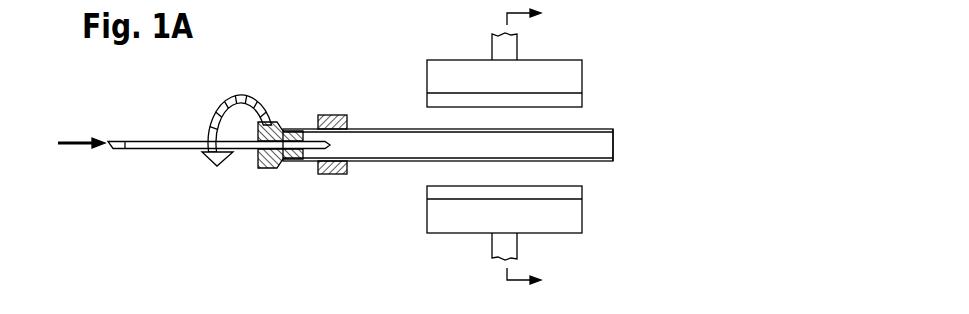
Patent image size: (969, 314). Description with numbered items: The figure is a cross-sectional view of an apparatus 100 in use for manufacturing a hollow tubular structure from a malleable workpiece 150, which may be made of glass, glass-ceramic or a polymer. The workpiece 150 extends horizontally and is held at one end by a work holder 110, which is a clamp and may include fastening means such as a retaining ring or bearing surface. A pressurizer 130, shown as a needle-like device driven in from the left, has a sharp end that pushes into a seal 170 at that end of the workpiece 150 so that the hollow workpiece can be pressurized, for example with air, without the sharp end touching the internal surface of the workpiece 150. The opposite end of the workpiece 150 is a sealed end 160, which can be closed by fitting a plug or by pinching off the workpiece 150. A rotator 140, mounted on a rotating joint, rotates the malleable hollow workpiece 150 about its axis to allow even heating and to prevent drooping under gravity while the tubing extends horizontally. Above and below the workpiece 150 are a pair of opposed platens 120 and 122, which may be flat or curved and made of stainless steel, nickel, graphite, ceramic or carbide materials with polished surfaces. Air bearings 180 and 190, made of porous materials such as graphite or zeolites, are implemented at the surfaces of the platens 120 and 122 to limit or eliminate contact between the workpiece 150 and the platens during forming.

The apparatus 100 is at (660, 90).
The work holder 110 is at (330, 174).
The platen 120 is at (473, 59).
The platen 122 is at (583, 215).
The pressurizer 130 is at (73, 140).
The rotator 140 is at (245, 100).
The workpiece 150 is at (398, 128).
The sealed end 160 is at (613, 145).
The seal 170 is at (272, 166).
The air bearing 180 is at (583, 98).
The air bearing 190 is at (583, 190).